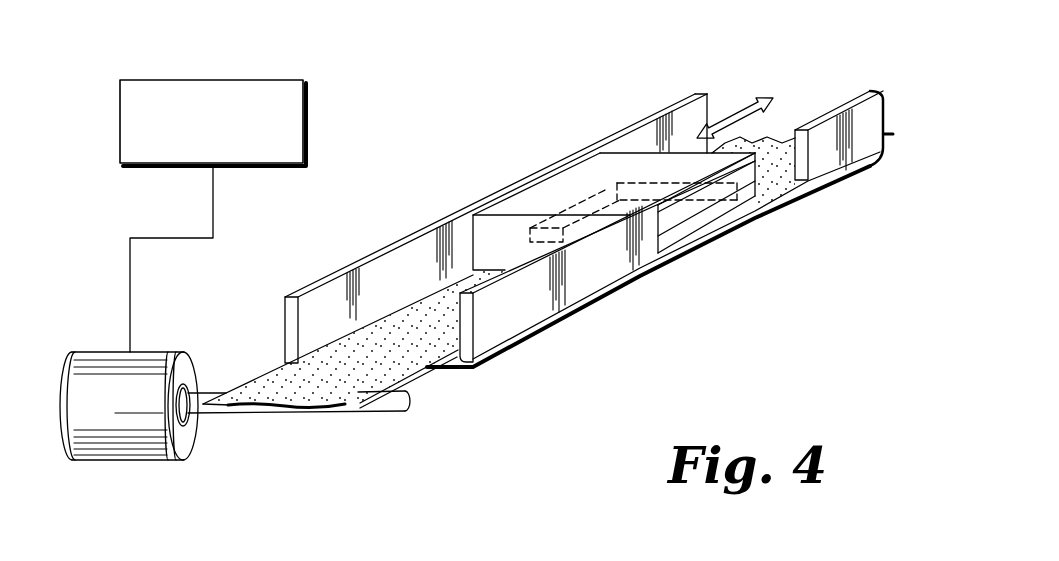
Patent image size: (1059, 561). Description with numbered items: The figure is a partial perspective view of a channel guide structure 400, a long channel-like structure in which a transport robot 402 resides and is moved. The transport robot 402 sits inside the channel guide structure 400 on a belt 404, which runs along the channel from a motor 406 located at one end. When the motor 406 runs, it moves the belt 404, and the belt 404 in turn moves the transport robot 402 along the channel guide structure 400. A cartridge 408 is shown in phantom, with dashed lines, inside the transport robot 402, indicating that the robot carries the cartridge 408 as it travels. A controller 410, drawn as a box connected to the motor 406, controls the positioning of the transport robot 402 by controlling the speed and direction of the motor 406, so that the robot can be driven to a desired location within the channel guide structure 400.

The channel guide structure 400 is at (517, 315).
The transport robot 402 is at (530, 203).
The belt 404 is at (355, 378).
The motor 406 is at (98, 455).
The cartridge 408 is at (604, 192).
The controller 410 is at (225, 78).